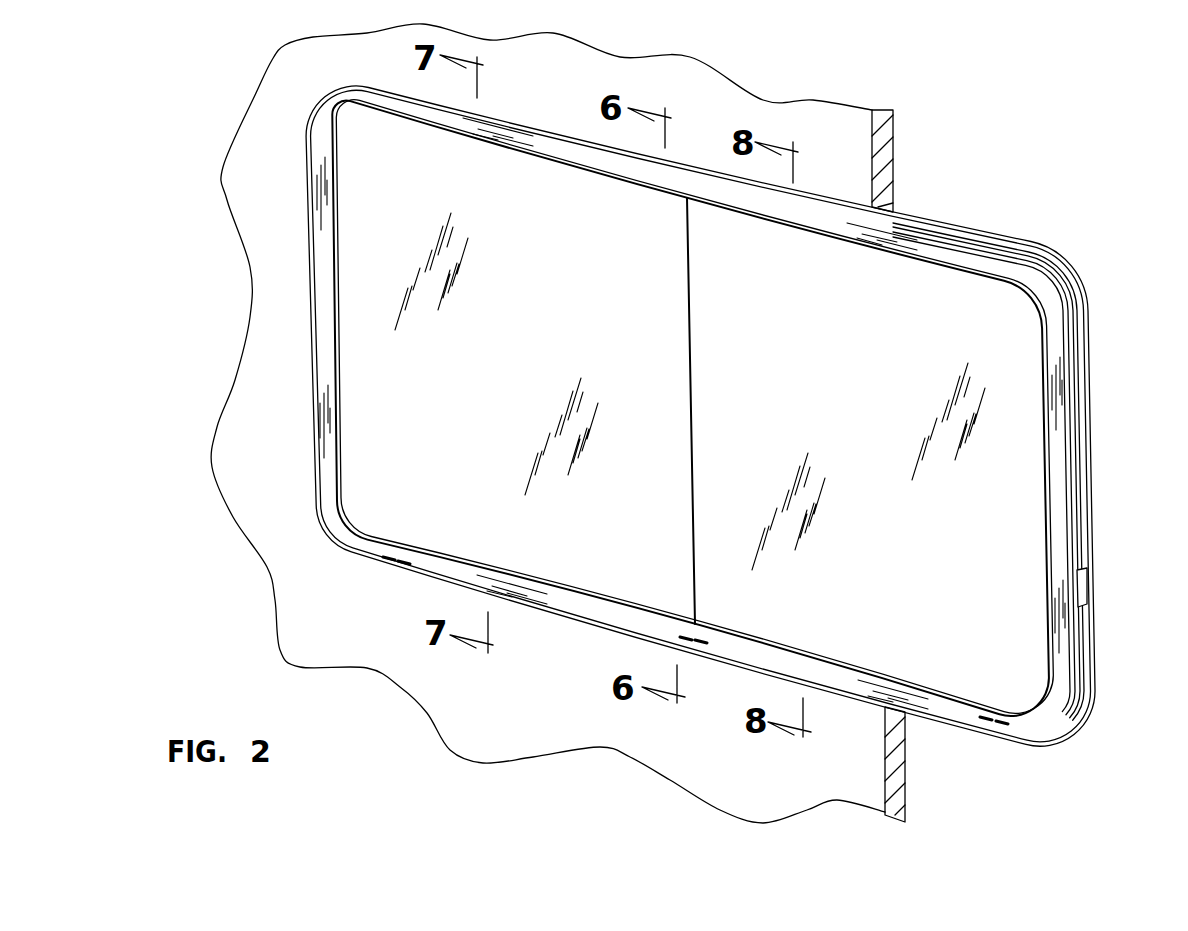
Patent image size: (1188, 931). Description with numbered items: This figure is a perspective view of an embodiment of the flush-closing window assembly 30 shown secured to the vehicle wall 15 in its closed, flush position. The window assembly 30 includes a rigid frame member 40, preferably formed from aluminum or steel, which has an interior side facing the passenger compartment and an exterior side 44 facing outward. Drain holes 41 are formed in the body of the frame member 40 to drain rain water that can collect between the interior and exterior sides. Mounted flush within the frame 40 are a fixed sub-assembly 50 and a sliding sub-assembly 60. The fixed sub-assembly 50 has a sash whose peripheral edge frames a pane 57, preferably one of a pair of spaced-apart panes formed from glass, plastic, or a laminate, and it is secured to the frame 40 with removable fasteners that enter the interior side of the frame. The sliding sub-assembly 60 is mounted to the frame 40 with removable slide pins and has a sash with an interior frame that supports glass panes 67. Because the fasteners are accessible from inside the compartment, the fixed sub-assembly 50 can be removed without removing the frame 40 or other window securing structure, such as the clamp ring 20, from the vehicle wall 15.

The vehicle wall 15 is at (893, 138).
The clamp ring 20 is at (1088, 317).
The flush-closing window assembly 30 is at (1028, 221).
The rigid frame member 40 is at (1037, 733).
The drain holes 41 is at (389, 561).
The exterior side 44 is at (1053, 523).
The fixed sub-assembly 50 is at (967, 677).
The pane 57 is at (906, 545).
The sliding sub-assembly 60 is at (360, 247).
The glass pane 67 is at (519, 397).